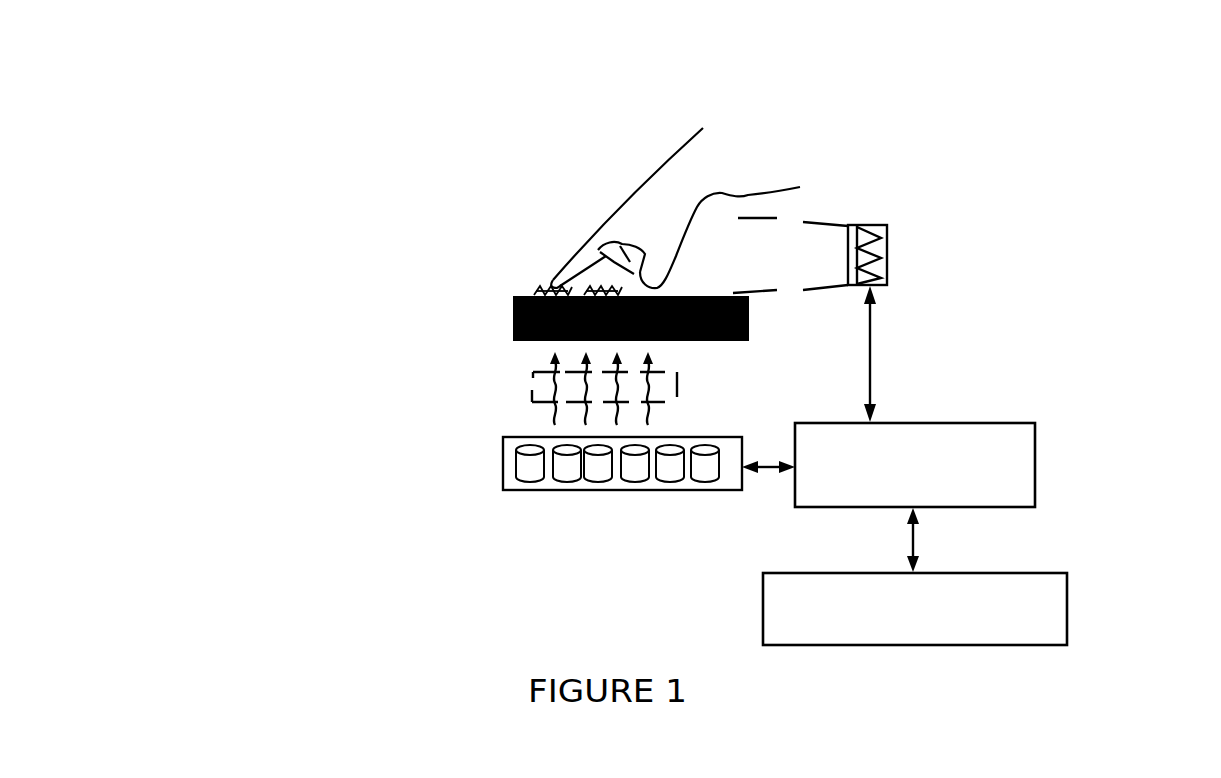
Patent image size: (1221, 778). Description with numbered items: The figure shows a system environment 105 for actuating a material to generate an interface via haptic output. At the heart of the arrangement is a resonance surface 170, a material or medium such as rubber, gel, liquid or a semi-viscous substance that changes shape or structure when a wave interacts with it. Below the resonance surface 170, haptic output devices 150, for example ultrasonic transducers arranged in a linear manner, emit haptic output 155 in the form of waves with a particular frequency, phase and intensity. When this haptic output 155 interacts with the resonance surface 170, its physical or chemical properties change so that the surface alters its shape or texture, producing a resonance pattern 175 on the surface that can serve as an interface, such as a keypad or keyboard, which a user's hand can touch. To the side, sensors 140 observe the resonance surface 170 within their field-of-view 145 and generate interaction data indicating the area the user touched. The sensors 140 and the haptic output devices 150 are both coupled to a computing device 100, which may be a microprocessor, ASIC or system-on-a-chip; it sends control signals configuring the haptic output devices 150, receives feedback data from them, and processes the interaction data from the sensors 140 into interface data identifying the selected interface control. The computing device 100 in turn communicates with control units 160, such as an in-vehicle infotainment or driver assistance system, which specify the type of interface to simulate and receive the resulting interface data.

The system environment 105 is at (772, 100).
The resonance pattern 175 is at (542, 287).
The resonance surface 170 is at (513, 297).
The haptic output 155 is at (535, 373).
The haptic output devices 150 is at (503, 437).
The field-of-view 145 is at (848, 226).
The sensors 140 is at (887, 255).
The computing device 100 is at (1005, 503).
The control units 160 is at (942, 643).